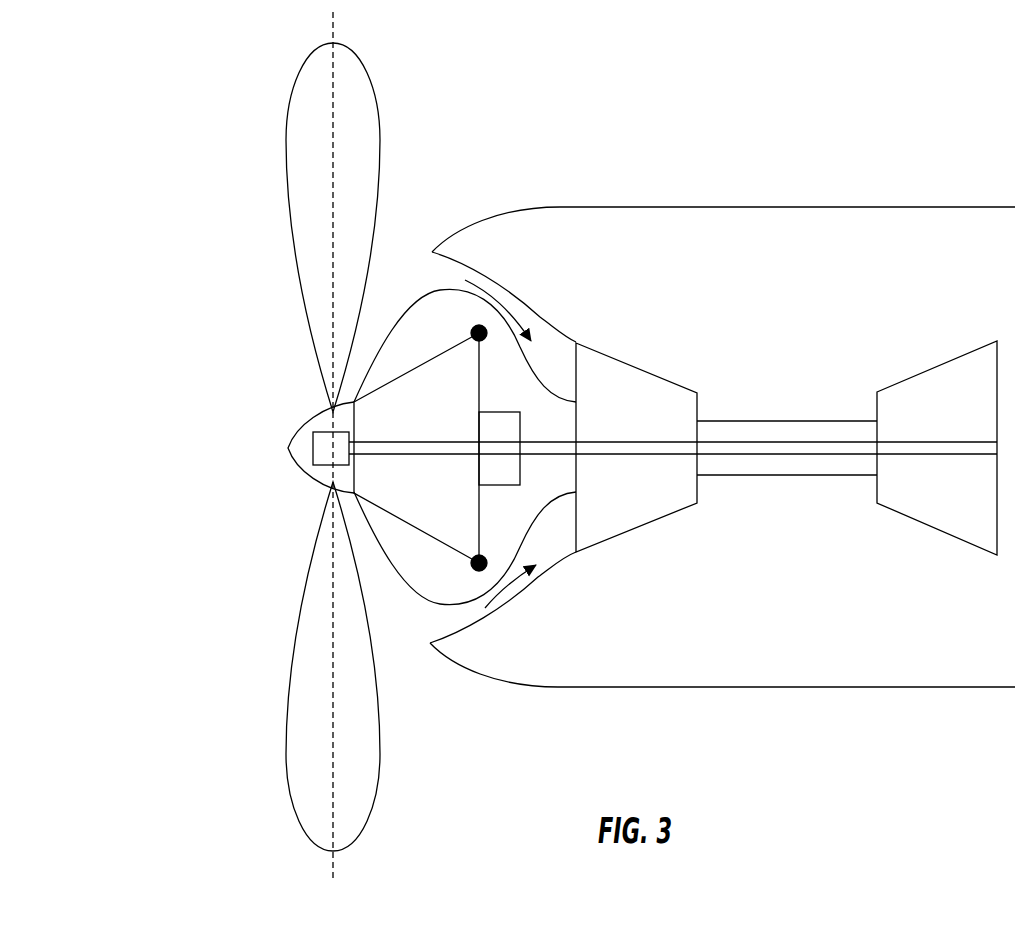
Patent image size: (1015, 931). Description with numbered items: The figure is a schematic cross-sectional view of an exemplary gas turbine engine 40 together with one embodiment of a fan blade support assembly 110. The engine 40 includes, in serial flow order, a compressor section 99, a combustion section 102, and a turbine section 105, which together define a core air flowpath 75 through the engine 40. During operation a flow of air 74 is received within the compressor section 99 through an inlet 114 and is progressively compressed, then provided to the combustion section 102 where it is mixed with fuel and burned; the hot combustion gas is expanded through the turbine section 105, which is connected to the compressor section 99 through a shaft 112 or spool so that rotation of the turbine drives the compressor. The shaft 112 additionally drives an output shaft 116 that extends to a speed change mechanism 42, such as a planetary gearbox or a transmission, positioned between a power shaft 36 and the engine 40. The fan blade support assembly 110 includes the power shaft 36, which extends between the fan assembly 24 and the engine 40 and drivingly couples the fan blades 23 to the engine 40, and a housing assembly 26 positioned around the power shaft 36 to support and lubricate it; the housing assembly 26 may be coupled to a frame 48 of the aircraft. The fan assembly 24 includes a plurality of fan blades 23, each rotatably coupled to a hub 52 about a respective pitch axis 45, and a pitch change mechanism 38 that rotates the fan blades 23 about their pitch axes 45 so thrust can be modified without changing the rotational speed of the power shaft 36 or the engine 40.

The fan blades 23 is at (288, 96).
The pitch axis 45 is at (333, 175).
The fan assembly 24 is at (176, 326).
The fan blade support assembly 110 is at (457, 166).
The housing assembly 26 is at (397, 262).
The flow of air 74 is at (505, 305).
The gas turbine engine 40 is at (758, 316).
The compressor section 99 is at (625, 362).
The turbine section 105 is at (945, 362).
The combustion section 102 is at (800, 422).
The shaft 112 is at (781, 455).
The core air flowpath 75 is at (799, 553).
The pitch change mechanism 38 is at (308, 458).
The hub 52 is at (306, 426).
The power shaft 36 is at (437, 455).
The speed change mechanism 42 is at (492, 487).
The frame 48 is at (476, 567).
The output shaft 116 is at (567, 454).
The inlet 114 is at (417, 636).